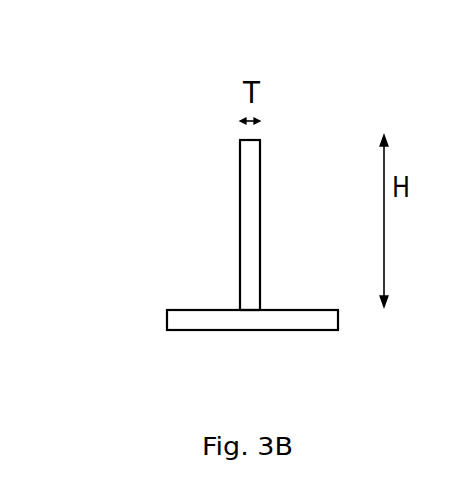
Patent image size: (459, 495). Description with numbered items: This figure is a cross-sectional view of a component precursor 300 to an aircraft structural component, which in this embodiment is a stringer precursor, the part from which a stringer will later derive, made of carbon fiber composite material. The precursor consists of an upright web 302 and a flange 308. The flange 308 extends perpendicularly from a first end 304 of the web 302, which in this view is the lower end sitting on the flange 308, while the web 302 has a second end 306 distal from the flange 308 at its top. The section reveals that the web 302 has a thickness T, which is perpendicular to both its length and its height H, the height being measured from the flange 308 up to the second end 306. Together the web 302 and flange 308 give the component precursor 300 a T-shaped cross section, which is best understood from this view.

The component precursor 300 is at (211, 139).
The web 302 is at (241, 258).
The first end of the web 304 is at (254, 300).
The second end of the web 306 is at (263, 134).
The flange 308 is at (187, 312).